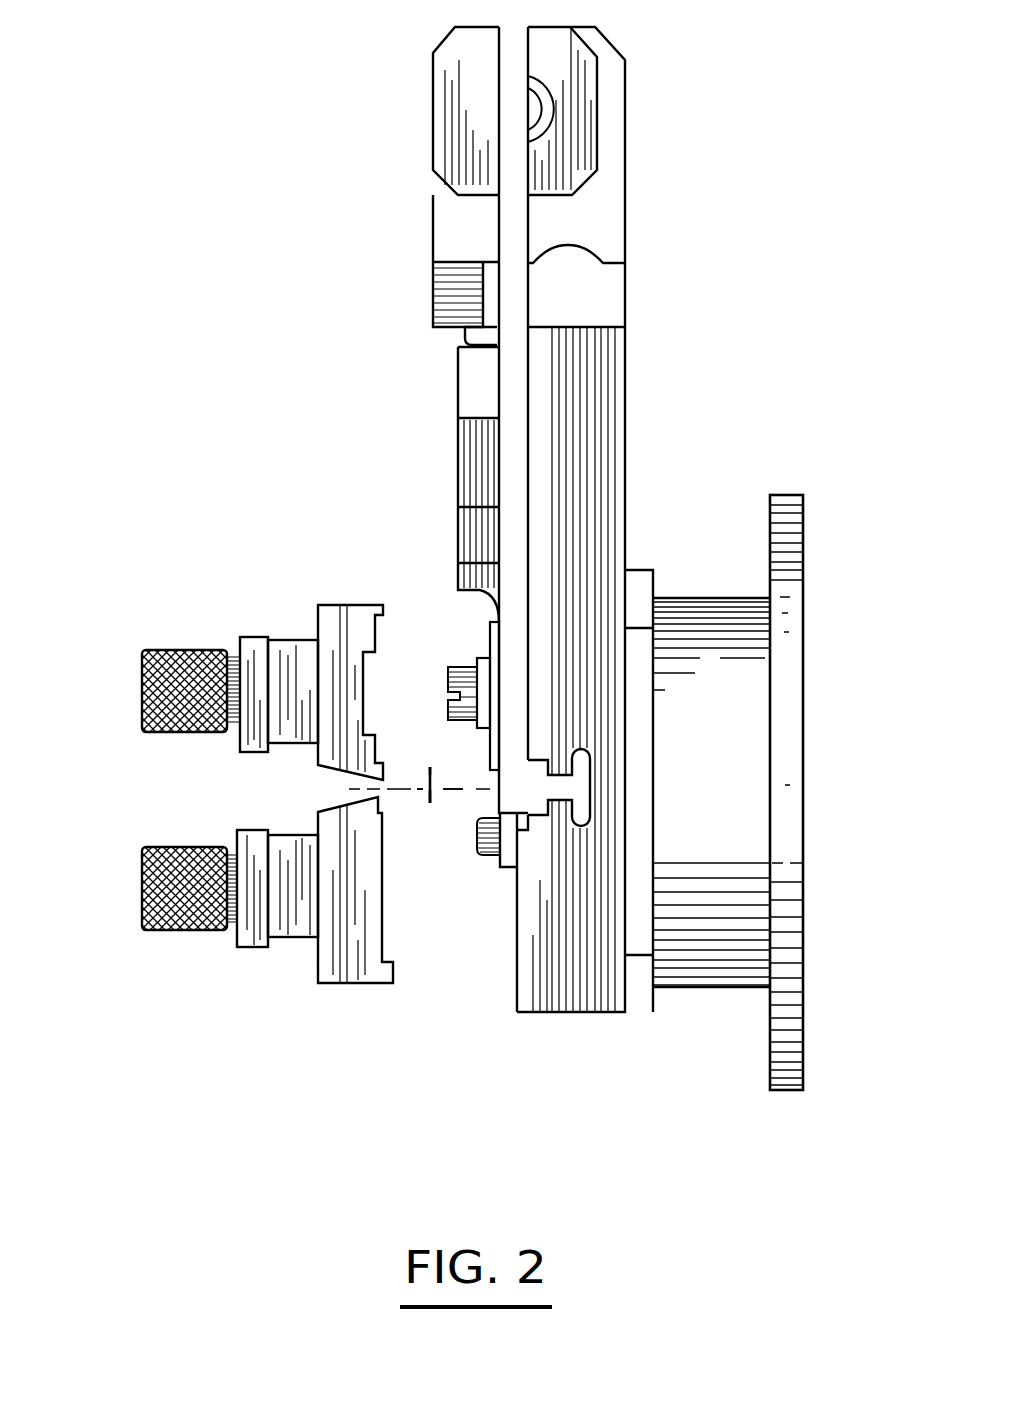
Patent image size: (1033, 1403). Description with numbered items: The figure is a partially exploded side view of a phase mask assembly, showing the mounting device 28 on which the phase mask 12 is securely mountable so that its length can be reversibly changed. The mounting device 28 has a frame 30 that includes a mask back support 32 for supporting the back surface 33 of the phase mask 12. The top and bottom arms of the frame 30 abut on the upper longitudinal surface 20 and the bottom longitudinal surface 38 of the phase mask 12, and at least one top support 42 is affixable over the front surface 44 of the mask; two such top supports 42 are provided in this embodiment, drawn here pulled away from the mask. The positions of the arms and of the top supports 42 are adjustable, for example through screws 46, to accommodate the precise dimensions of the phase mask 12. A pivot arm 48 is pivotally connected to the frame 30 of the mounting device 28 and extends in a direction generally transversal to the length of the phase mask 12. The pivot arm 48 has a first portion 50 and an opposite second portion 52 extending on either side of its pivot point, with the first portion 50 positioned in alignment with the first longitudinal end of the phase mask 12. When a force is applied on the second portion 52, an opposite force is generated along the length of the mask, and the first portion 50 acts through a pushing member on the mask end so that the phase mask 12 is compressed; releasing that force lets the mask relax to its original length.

The mounting device 28 is at (765, 200).
The frame 30 is at (612, 357).
The pivot arm 48 is at (530, 470).
The second portion 52 is at (508, 375).
The first portion 50 is at (513, 732).
The mask back support 32 is at (497, 797).
The screws 46 is at (142, 657).
The top support 42 is at (277, 653).
The phase mask 12 is at (423, 782).
The upper longitudinal surface 20 is at (429, 762).
The bottom longitudinal surface 38 is at (430, 812).
The front surface 44 is at (423, 795).
The back surface 33 is at (435, 802).